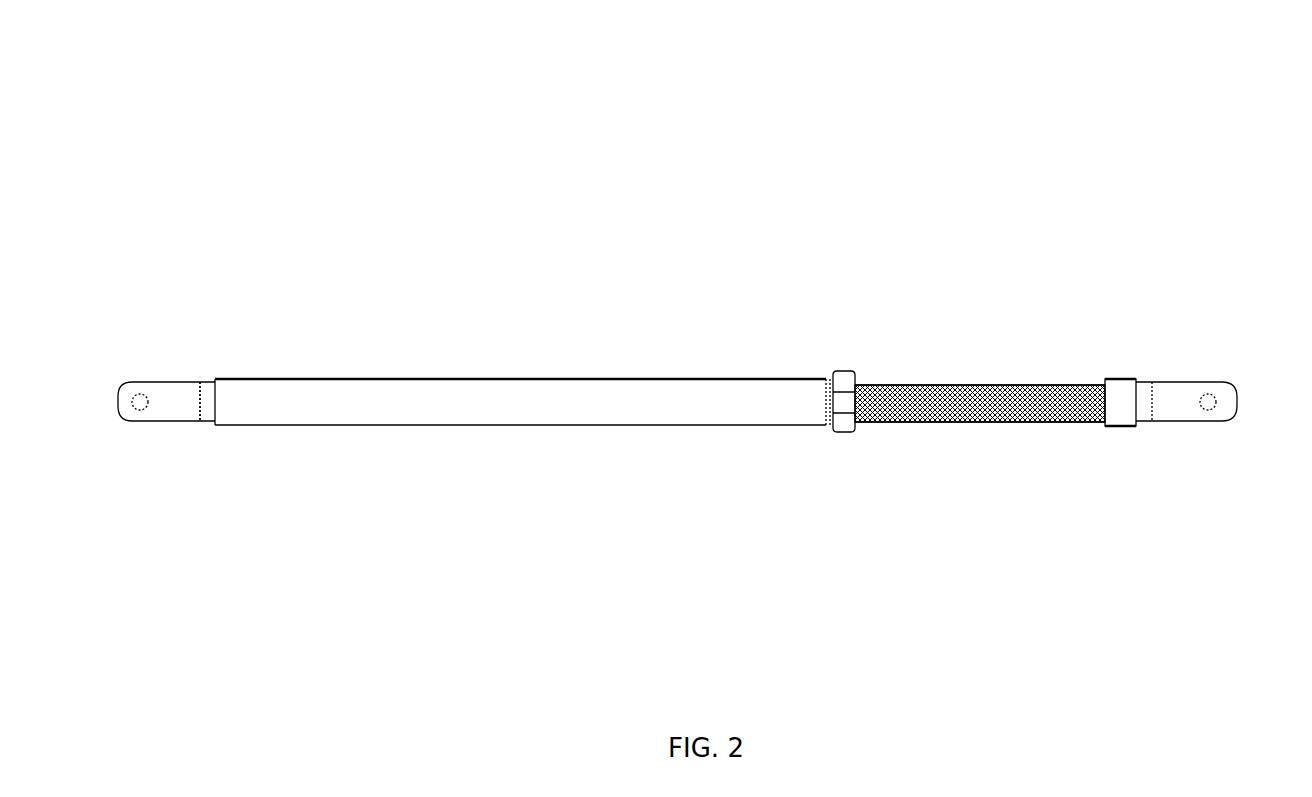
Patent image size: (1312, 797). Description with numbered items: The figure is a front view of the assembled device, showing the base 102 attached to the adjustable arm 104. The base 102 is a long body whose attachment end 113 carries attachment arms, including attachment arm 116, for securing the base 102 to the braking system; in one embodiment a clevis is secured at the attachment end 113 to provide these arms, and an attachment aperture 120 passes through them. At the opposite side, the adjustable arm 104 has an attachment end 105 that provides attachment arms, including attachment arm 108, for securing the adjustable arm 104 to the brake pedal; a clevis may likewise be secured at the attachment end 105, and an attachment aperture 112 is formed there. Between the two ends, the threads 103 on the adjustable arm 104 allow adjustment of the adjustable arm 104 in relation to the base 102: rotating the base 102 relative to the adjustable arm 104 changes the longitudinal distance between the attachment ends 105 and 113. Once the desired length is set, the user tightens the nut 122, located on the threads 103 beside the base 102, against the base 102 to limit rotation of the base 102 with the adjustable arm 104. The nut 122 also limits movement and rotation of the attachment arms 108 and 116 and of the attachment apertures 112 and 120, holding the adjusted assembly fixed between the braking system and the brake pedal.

The base 102 is at (422, 379).
The threads 103 is at (935, 421).
The adjustable arm 104 is at (975, 388).
The attachment end 105 is at (1236, 385).
The attachment arm 108 is at (1173, 395).
The attachment aperture 112 is at (1208, 405).
The attachment end 113 is at (106, 396).
The attachment arm 116 is at (165, 410).
The attachment aperture 120 is at (139, 403).
The nut 122 is at (826, 377).